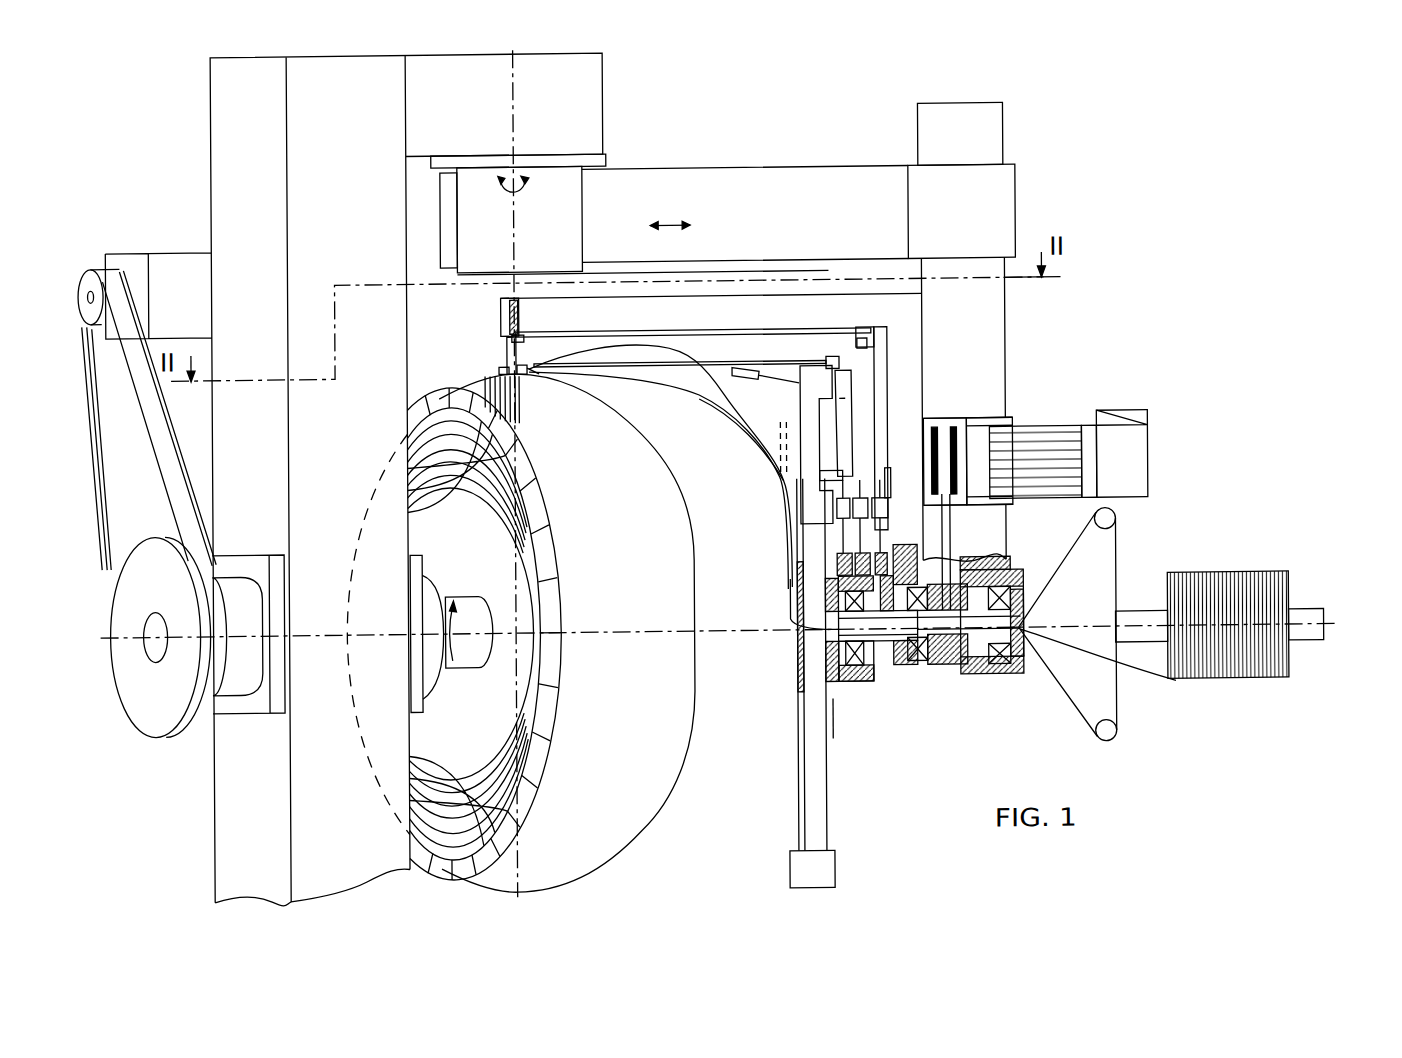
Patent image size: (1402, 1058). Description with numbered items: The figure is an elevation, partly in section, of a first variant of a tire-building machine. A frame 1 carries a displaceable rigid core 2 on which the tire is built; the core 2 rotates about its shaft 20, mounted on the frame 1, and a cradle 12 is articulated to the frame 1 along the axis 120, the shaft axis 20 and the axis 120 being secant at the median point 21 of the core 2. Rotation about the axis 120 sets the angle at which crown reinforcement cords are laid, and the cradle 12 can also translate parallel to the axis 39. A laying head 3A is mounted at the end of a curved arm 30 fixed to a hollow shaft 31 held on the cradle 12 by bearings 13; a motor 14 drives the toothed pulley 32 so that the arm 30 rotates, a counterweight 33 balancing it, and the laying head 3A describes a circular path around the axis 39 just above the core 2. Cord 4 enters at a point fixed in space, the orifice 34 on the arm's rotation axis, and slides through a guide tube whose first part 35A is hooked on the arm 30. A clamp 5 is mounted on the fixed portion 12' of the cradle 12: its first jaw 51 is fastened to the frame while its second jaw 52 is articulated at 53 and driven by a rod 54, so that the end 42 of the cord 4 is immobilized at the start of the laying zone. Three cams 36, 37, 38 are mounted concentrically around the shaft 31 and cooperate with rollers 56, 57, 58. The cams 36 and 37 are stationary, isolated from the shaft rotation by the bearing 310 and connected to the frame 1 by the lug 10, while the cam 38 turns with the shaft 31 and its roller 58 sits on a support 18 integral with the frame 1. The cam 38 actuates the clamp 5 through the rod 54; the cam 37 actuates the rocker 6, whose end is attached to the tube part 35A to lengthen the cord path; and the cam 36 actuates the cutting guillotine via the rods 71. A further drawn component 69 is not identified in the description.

The frame 1 is at (230, 141).
The axis 120 is at (518, 78).
The cradle 12 is at (757, 335).
The portion of the cradle 12' is at (740, 311).
The rigid core 2 is at (619, 785).
The end of the cord 42 is at (518, 425).
The median point 21 is at (515, 641).
The shaft 20 is at (462, 668).
The articulation 53 is at (500, 312).
The rod 54 is at (815, 332).
The rods 71 is at (773, 360).
The second jaw 52 is at (505, 352).
The laying head 3A is at (530, 348).
The clamp 5 is at (500, 368).
The first jaw 51 is at (530, 370).
The curved arm 30 is at (745, 405).
The tube part 35A is at (760, 427).
The support block 69 is at (817, 510).
The rocker 6 is at (846, 392).
The roller 57 is at (888, 535).
The support 18 is at (888, 505).
The counterweight 33 is at (795, 862).
The cam 36 is at (850, 685).
The bearing 310 is at (835, 735).
The cam 37 is at (866, 690).
The cam 38 is at (880, 700).
The lug 10 is at (905, 670).
The shaft 31 is at (950, 670).
The toothed pulley 32 is at (985, 685).
The bearings 13 is at (920, 665).
The orifice 34 is at (1020, 605).
The roller 58 is at (920, 555).
The roller 56 is at (835, 568).
The axis 39 is at (745, 632).
The motor 14 is at (1089, 432).
The cord 4 is at (1160, 686).